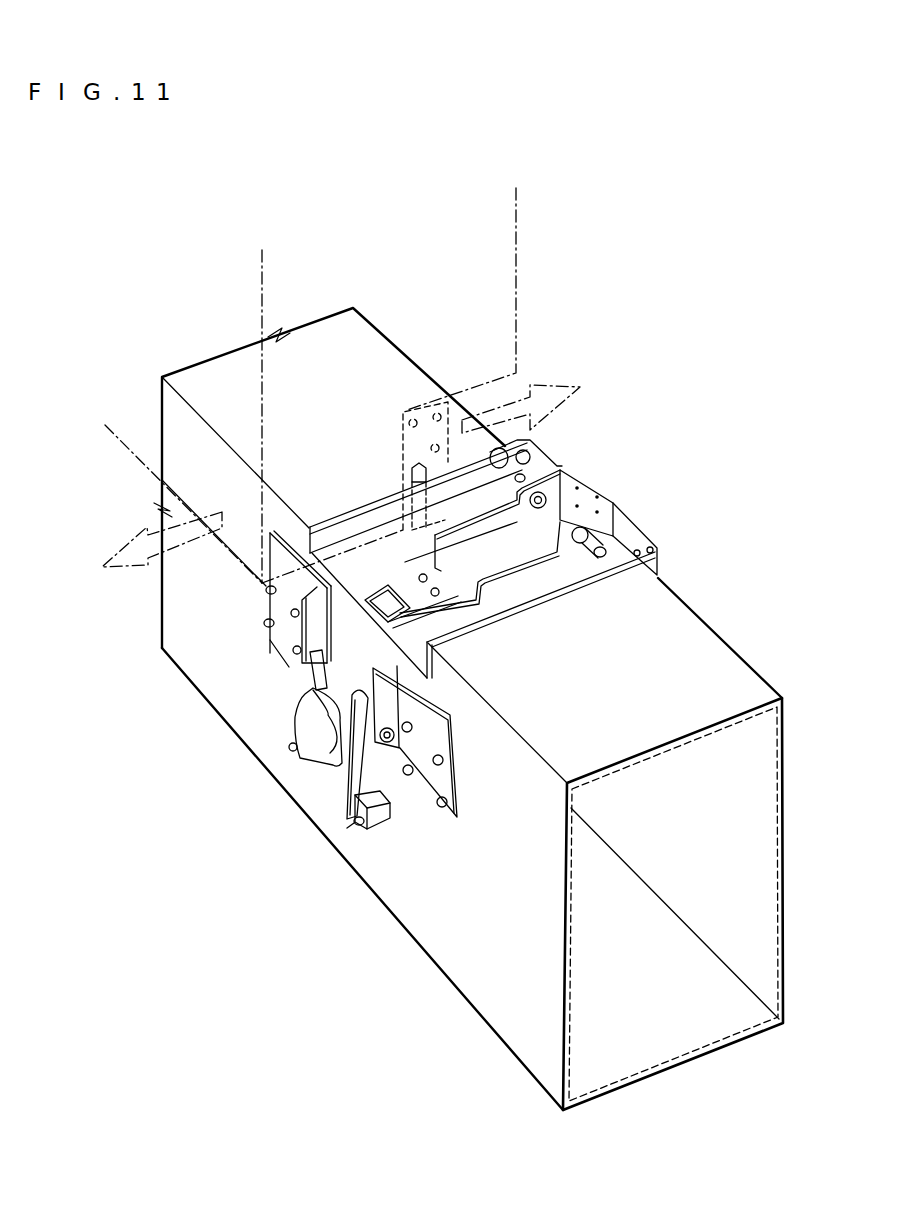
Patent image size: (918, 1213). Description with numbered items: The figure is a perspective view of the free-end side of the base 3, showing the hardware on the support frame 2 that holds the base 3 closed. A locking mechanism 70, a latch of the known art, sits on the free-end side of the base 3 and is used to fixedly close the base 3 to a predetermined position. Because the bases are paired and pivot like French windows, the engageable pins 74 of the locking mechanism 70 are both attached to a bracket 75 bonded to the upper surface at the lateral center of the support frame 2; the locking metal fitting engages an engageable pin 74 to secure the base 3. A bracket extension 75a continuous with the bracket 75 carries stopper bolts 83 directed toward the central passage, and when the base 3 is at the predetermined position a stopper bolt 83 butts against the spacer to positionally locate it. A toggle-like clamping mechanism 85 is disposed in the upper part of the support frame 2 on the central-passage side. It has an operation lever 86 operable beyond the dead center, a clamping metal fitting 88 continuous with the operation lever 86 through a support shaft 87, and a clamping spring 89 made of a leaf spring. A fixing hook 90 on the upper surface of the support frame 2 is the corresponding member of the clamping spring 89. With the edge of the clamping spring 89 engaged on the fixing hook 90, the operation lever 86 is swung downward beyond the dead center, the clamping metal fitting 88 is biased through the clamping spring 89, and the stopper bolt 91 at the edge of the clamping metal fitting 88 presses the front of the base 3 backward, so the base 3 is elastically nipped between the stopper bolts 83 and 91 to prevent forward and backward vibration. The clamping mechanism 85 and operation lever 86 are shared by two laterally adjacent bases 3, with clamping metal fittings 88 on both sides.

The support frame 2 is at (455, 968).
The base 3 is at (516, 240).
The locking mechanism 70 is at (412, 497).
The engageable pin 74 is at (545, 462).
The bracket 75 is at (527, 578).
The bracket extension 75a is at (628, 525).
The stopper bolt 83 is at (522, 441).
The clamping mechanism 85 is at (272, 759).
The operation lever 86 is at (322, 681).
The support shaft 87 is at (345, 688).
The clamping metal fitting 88 is at (312, 760).
The clamping spring 89 is at (307, 715).
The fixing hook 90 is at (404, 594).
The stopper bolt 91 is at (355, 830).